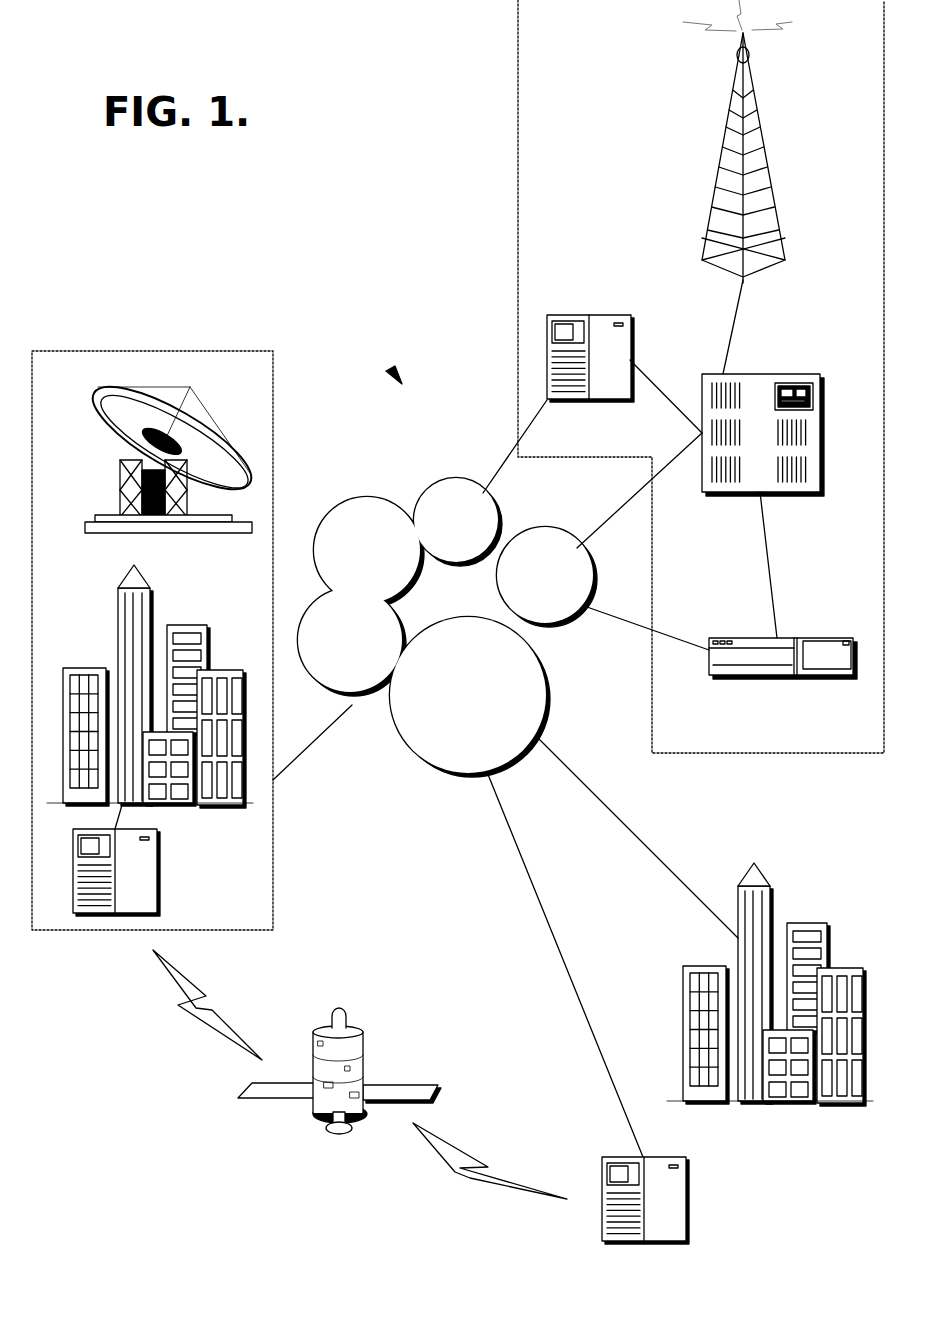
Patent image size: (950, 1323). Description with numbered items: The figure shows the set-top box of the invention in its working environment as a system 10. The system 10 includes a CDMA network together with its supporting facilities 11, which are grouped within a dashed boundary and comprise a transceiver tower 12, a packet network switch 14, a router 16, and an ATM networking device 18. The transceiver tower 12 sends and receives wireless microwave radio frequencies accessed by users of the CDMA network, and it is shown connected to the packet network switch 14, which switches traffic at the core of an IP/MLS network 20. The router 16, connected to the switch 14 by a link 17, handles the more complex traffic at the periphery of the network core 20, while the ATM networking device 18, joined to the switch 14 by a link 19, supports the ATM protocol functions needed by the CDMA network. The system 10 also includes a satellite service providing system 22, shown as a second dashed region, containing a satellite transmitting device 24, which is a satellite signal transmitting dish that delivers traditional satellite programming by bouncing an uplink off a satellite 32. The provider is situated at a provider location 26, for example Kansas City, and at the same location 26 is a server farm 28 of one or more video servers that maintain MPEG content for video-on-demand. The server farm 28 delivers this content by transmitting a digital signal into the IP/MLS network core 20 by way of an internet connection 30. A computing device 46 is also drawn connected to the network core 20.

The system 10 is at (398, 378).
The CDMA support facilities 11 is at (518, 258).
The transceiver tower 12 is at (716, 183).
The packet network switch 14 is at (795, 374).
The router 16 is at (805, 638).
The connection 17 is at (775, 600).
The ATM networking device 18 is at (572, 315).
The connection 19 is at (663, 393).
The IP/MLS network core 20 is at (473, 613).
The satellite service providing system 22 is at (150, 351).
The satellite transmitting device 24 is at (100, 425).
The provider location 26 is at (80, 668).
The server farm 28 is at (72, 885).
The internet connection 30 is at (307, 745).
The satellite 32 is at (363, 1058).
The computing device 46 is at (688, 1215).